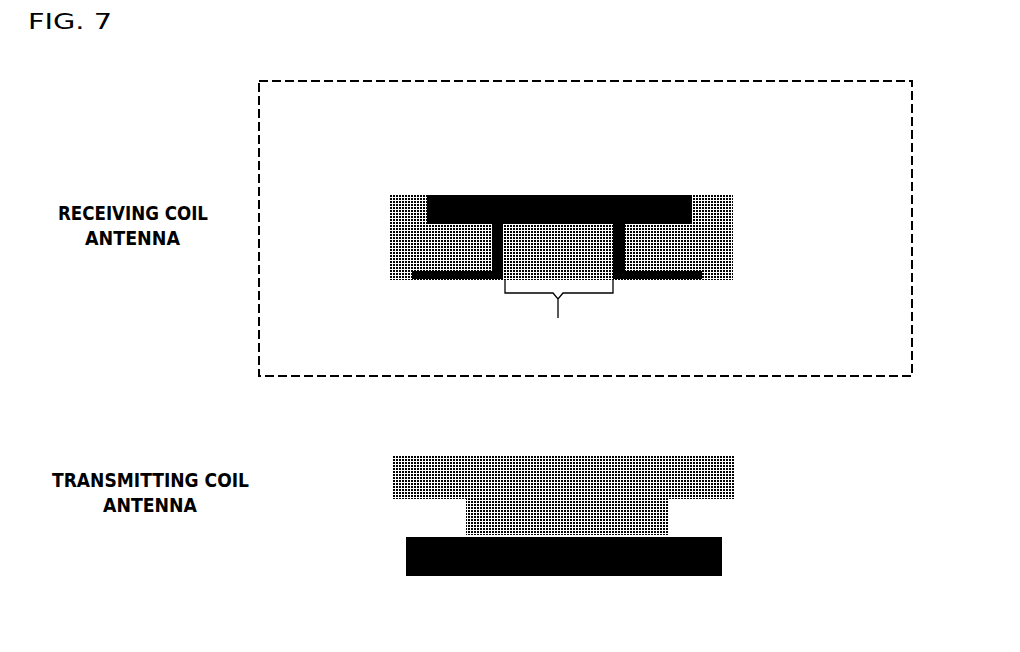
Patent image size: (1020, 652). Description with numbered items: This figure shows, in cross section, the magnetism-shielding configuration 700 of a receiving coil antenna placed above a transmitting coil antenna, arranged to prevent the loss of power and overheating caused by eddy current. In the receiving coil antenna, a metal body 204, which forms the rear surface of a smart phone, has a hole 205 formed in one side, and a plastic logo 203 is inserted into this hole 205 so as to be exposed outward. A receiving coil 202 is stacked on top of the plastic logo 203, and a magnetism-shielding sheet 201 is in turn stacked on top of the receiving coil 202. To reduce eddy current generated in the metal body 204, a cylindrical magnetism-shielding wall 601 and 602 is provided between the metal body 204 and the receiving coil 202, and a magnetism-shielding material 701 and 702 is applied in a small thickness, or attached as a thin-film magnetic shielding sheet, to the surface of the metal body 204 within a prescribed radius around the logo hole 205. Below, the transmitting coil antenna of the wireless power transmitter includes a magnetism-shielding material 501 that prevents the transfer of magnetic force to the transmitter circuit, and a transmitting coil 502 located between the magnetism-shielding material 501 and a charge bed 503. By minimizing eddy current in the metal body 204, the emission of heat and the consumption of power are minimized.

The magnetism-shielding configuration of the receiving coil antenna 700 is at (257, 127).
The magnetism-shielding sheet 201 is at (692, 196).
The metal body 204 is at (720, 220).
The receiving coil 202 is at (583, 237).
The plastic logo 203 is at (548, 277).
The hole 205 is at (559, 314).
The cylindrical magnetism-shielding wall 601 is at (492, 250).
The cylindrical magnetism-shielding wall 602 is at (626, 258).
The magnetism-shielding material 701 is at (437, 279).
The magnetism-shielding material 702 is at (687, 280).
The charge bed 503 is at (738, 463).
The transmitting coil 502 is at (670, 517).
The magnetism-shielding material 501 is at (723, 573).